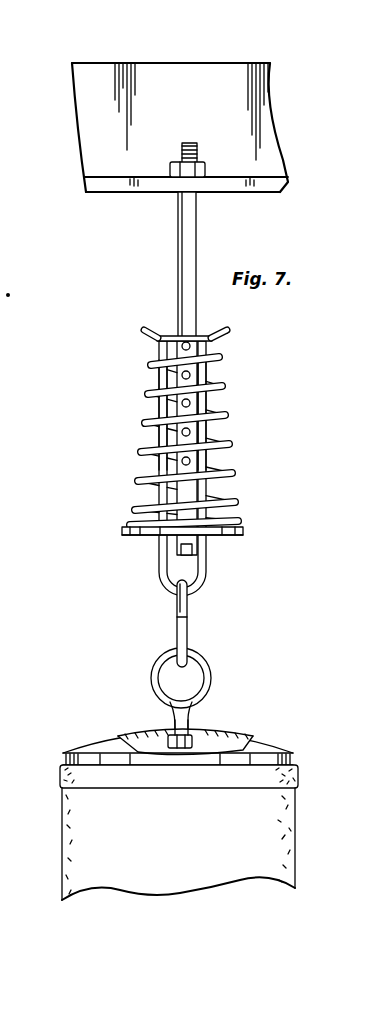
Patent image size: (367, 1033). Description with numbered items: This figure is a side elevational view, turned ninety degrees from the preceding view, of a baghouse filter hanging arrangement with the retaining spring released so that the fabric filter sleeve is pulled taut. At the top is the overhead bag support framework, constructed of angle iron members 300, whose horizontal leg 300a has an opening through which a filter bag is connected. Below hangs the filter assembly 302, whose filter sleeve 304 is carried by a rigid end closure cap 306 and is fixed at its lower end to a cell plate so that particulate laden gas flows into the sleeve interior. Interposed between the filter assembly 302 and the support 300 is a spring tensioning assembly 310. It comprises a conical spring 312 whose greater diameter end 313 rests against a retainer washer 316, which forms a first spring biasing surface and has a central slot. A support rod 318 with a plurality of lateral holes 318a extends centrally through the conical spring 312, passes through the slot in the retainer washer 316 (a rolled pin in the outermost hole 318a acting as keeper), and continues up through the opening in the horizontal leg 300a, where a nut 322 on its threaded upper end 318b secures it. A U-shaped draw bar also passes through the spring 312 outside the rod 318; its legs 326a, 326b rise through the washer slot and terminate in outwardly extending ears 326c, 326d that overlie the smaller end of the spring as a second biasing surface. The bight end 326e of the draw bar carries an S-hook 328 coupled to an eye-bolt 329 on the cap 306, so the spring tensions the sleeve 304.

The angle iron member 300 is at (66, 101).
The horizontal leg 300a is at (231, 183).
The filter assembly 302 is at (202, 786).
The filter sleeve 304 is at (291, 812).
The end closure cap 306 is at (256, 748).
The spring tensioning assembly 310 is at (206, 472).
The conical spring 312 is at (140, 433).
The greater diameter end 313 is at (237, 526).
The retainer washer 316 is at (242, 536).
The support rod 318 is at (180, 250).
The lateral holes 318a is at (221, 380).
The threaded upper end 318b is at (188, 143).
The nut 322 is at (200, 171).
The leg 326a is at (159, 472).
The leg 326b is at (207, 462).
The ear 326c is at (145, 335).
The ear 326d is at (232, 335).
The bight end 326e is at (206, 590).
The S-hook 328 is at (188, 630).
The eye-bolt 329 is at (210, 680).